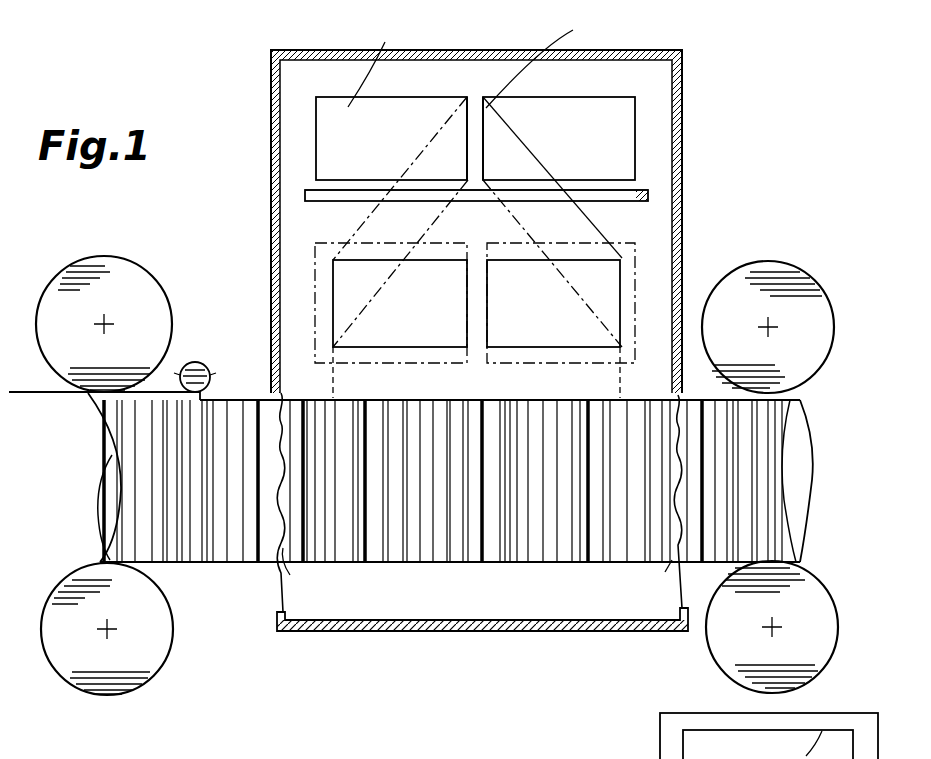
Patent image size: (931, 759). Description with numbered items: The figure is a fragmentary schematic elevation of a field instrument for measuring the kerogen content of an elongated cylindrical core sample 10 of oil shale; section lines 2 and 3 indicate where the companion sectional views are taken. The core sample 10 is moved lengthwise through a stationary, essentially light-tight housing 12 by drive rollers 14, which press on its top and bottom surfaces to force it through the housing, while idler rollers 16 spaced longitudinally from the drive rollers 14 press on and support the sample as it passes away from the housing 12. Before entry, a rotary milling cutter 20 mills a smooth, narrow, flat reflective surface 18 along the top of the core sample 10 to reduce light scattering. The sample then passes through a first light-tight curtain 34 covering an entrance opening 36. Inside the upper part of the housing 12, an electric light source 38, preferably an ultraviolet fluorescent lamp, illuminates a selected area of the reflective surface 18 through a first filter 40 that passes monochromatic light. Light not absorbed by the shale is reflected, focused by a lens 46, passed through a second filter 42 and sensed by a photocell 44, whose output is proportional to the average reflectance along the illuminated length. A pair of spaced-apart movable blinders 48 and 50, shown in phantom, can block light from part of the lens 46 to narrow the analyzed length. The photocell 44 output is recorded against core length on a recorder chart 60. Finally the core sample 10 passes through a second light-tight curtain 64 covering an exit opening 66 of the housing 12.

The section line 2- 2 is at (473, 50).
The section line 3- 3 is at (173, 393).
The core sample 10 is at (713, 410).
The housing 12 is at (684, 152).
The drive rollers 14 is at (133, 262).
The idler rollers 16 is at (812, 284).
The reflective surface 18 is at (226, 399).
The rotary milling cutter 20 is at (195, 362).
The first light-tight curtain 34 is at (290, 575).
The entrance opening 36 is at (290, 399).
The light source 38 is at (382, 108).
The first filter 40 is at (363, 197).
The second filter 42 is at (622, 204).
The photocell 44 is at (478, 141).
The lens 46 is at (407, 270).
The blinder 48 is at (312, 283).
The blinder 50 is at (637, 273).
The recorder chart 60 is at (868, 757).
The second light-tight curtain 64 is at (665, 572).
The exit opening 66 is at (684, 394).